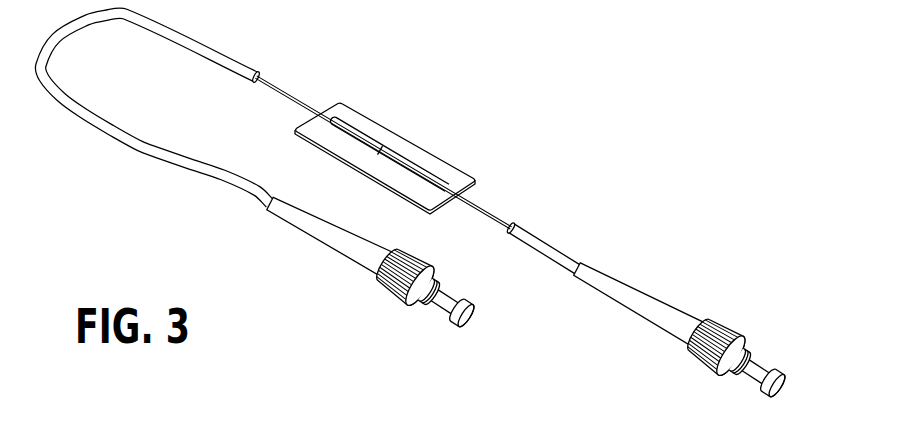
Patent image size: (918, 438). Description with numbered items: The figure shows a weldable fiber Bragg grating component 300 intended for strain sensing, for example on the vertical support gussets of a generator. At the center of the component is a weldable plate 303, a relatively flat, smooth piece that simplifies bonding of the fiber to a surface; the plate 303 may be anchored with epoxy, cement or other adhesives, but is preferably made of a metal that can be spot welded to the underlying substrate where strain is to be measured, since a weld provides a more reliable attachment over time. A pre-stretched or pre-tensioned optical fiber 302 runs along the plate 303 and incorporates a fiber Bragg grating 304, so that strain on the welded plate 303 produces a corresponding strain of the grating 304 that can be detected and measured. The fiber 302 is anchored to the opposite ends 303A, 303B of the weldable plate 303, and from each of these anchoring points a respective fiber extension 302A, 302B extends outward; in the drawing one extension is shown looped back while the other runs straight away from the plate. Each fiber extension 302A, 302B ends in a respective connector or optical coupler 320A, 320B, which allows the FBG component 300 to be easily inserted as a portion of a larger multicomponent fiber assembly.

The weldable fiber Bragg grating component 300 is at (404, 124).
The optical fiber 302 is at (323, 133).
The fiber extension 302A is at (552, 248).
The fiber extension 302B is at (224, 174).
The weldable plate 303 is at (444, 159).
The end of weldable plate 303A is at (447, 168).
The end of weldable plate 303B is at (336, 116).
The fiber Bragg grating 304 is at (380, 147).
The connector or optical coupler 320A is at (728, 330).
The connector or optical coupler 320B is at (387, 290).